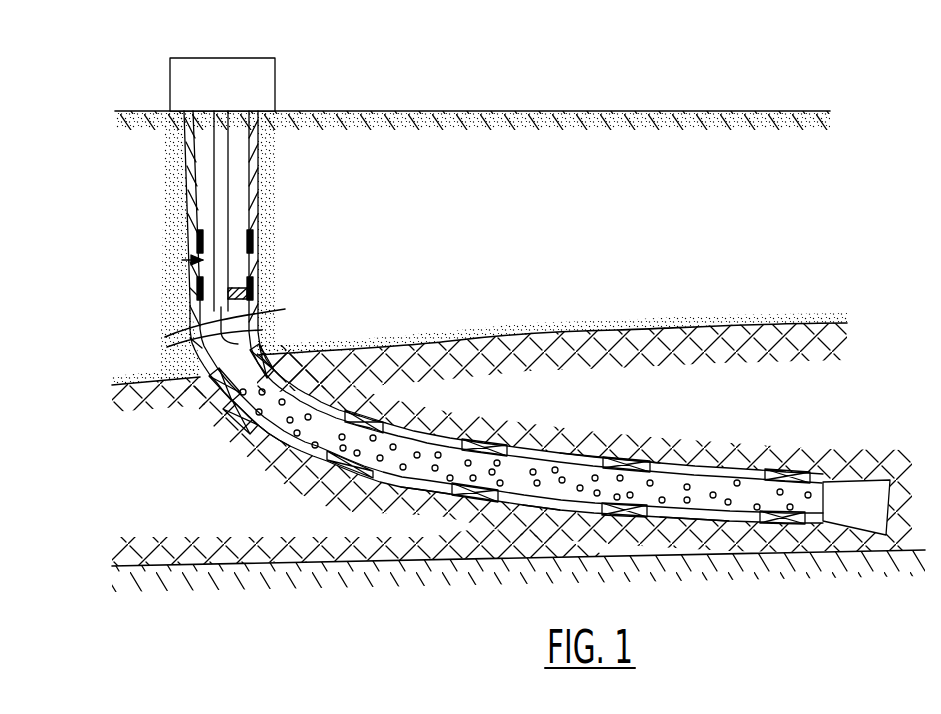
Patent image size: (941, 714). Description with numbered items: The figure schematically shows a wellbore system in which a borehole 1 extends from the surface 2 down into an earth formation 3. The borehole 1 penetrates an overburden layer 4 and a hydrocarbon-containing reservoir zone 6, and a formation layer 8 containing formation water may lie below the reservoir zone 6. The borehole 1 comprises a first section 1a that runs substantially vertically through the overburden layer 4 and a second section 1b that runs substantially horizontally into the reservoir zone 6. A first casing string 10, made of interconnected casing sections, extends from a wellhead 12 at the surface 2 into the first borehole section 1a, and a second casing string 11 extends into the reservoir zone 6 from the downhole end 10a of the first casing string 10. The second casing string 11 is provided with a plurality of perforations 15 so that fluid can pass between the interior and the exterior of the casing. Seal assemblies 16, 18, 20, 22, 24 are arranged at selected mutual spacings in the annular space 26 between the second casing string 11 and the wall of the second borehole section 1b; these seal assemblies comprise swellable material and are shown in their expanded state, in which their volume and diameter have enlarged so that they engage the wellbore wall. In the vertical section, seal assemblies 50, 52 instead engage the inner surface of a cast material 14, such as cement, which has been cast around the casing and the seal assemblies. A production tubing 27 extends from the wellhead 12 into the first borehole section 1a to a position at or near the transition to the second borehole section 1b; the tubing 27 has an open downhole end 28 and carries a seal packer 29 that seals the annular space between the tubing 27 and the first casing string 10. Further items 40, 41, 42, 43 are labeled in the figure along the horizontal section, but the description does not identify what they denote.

The borehole 1 is at (262, 260).
The first borehole section 1a is at (260, 203).
The second borehole section 1b is at (442, 432).
The surface 2 is at (360, 111).
The earth formation 3 is at (610, 199).
The overburden layer 4 is at (671, 287).
The reservoir zone 6 is at (679, 397).
The formation layer 8 is at (742, 593).
The first casing string 10 is at (182, 260).
The downhole end 10a is at (198, 298).
The second casing string 11 is at (543, 455).
The wellhead 12 is at (180, 82).
The cast material 14 is at (192, 210).
The perforations 15 is at (687, 484).
The seal assembly 16 is at (226, 401).
The seal assembly 18 is at (333, 474).
The seal assembly 20 is at (472, 497).
The seal assembly 22 is at (620, 508).
The seal assembly 24 is at (785, 524).
The annular space 26 is at (587, 455).
The production tubing 27 is at (222, 170).
The open downhole end 28 is at (262, 330).
The seal packer 29 is at (207, 298).
The pipe segment 40 is at (270, 437).
The pipe segment 41 is at (418, 479).
The pipe segment 42 is at (543, 498).
The pipe segment 43 is at (688, 517).
The seal assembly 50 is at (250, 290).
The seal assembly 52 is at (252, 242).